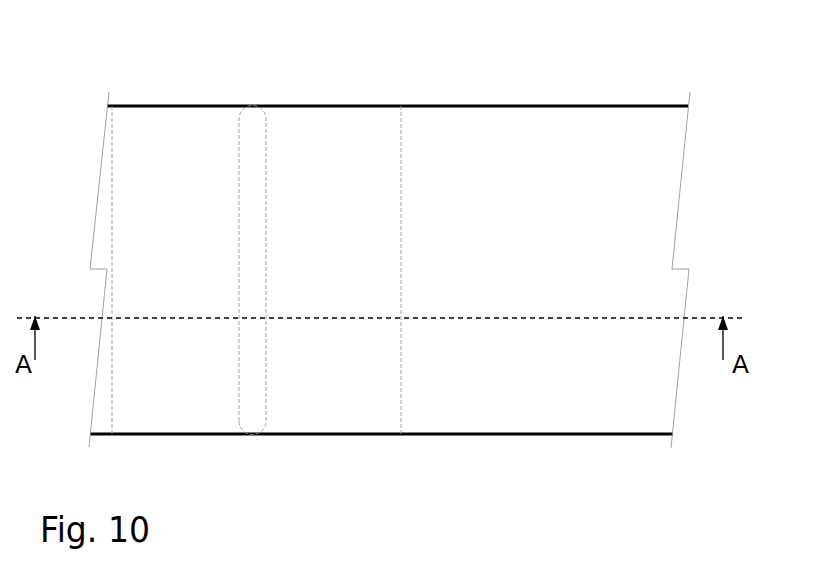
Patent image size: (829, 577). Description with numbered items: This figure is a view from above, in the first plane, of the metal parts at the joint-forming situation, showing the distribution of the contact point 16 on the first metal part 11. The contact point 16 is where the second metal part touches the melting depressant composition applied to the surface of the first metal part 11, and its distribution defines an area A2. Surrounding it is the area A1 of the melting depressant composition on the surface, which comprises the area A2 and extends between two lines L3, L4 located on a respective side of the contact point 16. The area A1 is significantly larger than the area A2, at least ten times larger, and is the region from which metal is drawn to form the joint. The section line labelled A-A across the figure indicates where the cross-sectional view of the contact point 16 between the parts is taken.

The first metal part 11 is at (185, 381).
The contact point 16 is at (253, 410).
The line L3 is at (401, 155).
The line L4 is at (112, 128).
The area A1 is at (252, 187).
The area A2 is at (255, 130).